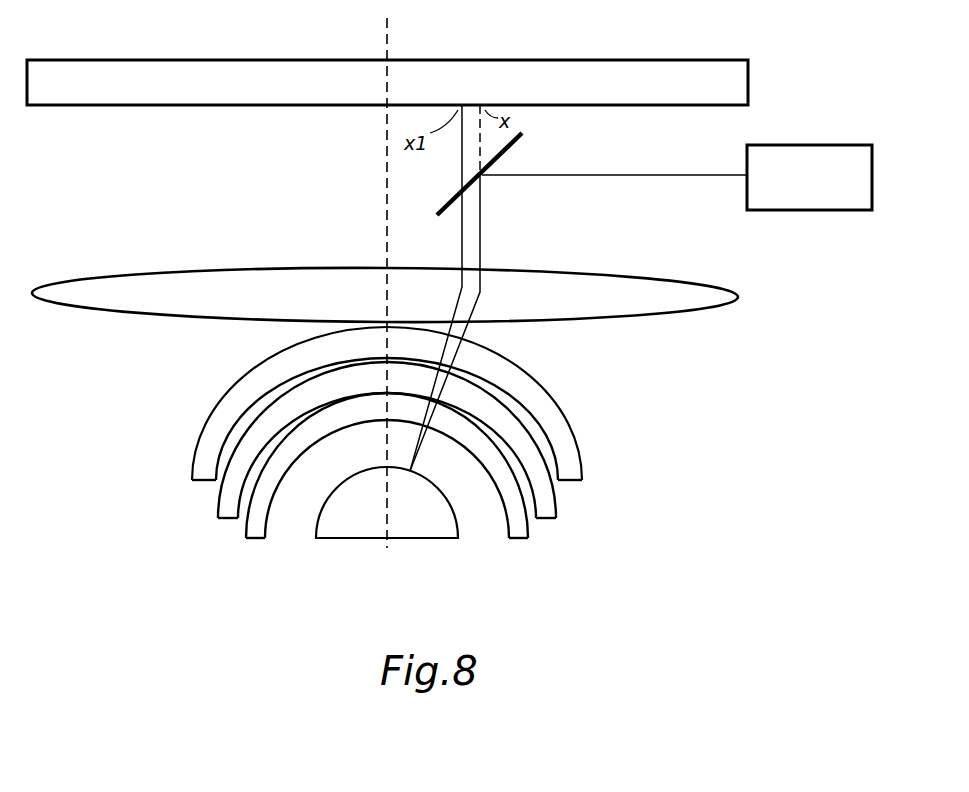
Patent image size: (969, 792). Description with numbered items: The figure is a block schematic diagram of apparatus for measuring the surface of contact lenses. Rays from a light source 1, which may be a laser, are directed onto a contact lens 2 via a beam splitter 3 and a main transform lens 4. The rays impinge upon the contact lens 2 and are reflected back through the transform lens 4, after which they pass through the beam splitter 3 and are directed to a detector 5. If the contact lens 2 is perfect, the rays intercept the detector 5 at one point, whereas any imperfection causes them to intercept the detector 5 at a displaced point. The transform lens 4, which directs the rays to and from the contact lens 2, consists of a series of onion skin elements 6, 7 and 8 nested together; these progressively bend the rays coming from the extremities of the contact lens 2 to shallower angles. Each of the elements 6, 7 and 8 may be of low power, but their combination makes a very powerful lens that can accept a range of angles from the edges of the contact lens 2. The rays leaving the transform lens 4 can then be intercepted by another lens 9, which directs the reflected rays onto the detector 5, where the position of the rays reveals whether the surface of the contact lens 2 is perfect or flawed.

The light source 1 is at (832, 145).
The contact lens 2 is at (421, 517).
The beam splitter 3 is at (517, 142).
The main transform lens 4 is at (535, 370).
The detector 5 is at (700, 60).
The onion skin element 6 is at (527, 530).
The onion skin element 7 is at (555, 505).
The onion skin element 8 is at (583, 467).
The lens 9 is at (683, 280).